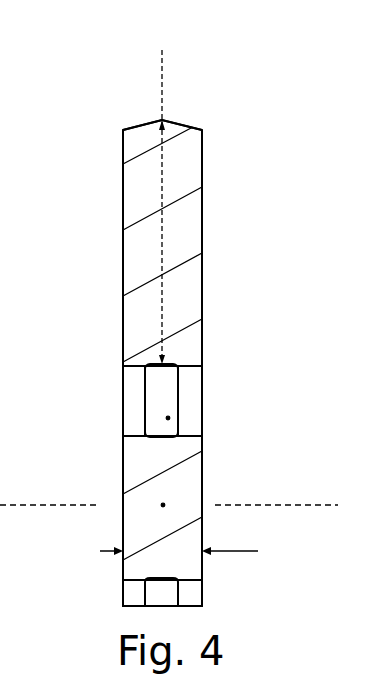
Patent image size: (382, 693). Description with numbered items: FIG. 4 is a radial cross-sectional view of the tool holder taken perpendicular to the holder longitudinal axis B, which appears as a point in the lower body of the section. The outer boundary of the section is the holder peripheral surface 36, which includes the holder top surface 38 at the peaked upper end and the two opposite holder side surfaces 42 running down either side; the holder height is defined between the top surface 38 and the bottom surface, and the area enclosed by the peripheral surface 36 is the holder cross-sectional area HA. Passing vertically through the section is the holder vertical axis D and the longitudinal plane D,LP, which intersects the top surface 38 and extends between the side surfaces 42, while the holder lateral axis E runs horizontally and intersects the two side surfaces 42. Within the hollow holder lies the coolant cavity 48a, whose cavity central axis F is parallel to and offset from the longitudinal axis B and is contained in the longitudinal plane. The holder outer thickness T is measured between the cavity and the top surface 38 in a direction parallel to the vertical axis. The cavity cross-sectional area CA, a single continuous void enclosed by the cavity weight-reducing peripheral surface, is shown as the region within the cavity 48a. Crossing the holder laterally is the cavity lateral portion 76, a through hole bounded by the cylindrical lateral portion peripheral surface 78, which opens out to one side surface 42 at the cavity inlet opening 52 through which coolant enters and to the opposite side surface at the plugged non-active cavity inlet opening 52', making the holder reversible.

The holder peripheral surface 36 is at (118, 187).
The holder top surface 38 is at (182, 125).
The holder side surfaces 42 is at (123, 268).
The coolant cavity 48a is at (165, 393).
The cavity inlet opening 52 is at (208, 401).
The non-active cavity inlet opening 52' is at (81, 401).
The lateral portion peripheral surface 78 is at (136, 433).
The cavity lateral portion 76 is at (118, 447).
The holder cross-sectional area HA is at (185, 177).
The holder outer thickness T is at (162, 243).
The cavity cross-sectional area CA is at (190, 385).
The cavity central axis F is at (170, 418).
The holder longitudinal axis B is at (165, 504).
The holder lateral axis E is at (285, 505).
The holder vertical axis and longitudinal plane D,LP is at (163, 73).